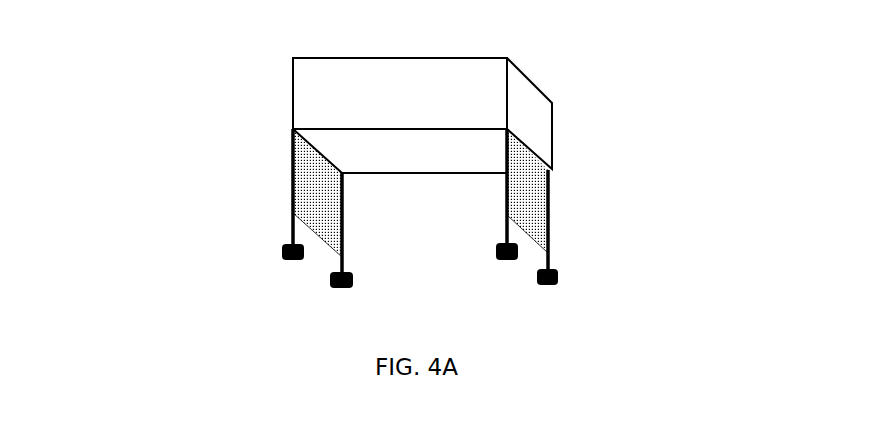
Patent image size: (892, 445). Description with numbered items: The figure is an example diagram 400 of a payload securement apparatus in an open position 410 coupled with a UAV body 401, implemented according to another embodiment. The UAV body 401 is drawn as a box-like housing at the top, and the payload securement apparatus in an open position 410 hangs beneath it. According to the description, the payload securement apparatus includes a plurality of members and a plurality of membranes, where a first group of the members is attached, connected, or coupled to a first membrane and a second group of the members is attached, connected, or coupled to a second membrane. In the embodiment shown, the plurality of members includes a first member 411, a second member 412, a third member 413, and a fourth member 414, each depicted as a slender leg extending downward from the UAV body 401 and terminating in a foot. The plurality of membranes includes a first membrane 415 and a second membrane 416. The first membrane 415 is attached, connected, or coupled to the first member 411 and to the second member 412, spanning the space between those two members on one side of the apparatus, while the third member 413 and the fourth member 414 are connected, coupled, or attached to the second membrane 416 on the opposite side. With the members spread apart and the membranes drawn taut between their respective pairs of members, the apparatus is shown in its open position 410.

The example diagram 400 is at (371, 170).
The UAV body 401 is at (552, 116).
The payload securement apparatus in an open position 410 is at (366, 213).
The first member 411 is at (291, 137).
The second member 412 is at (343, 258).
The third member 413 is at (506, 238).
The fourth member 414 is at (550, 252).
The first membrane 415 is at (332, 228).
The second membrane 416 is at (537, 230).